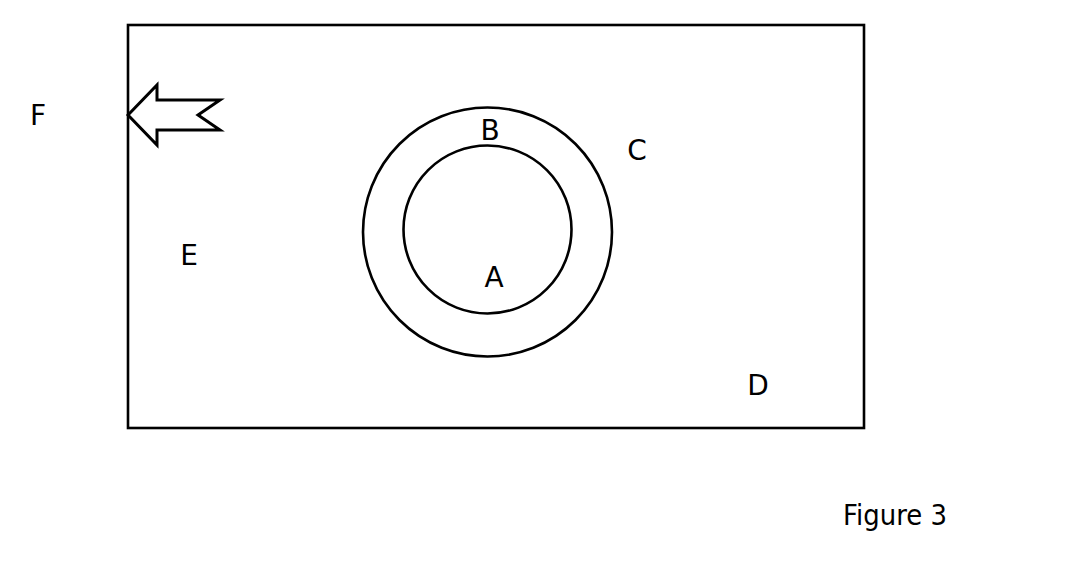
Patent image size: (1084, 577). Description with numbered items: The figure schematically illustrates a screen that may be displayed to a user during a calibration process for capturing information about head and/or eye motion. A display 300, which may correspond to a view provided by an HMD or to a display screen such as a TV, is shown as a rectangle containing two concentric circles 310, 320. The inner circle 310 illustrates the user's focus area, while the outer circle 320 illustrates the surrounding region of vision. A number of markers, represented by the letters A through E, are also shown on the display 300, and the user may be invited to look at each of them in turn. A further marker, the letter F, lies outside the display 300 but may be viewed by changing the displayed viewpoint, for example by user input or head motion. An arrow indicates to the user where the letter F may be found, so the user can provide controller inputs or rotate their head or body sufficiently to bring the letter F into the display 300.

The display 300 is at (463, 266).
The concentric circle (user's focus area) 310 is at (488, 230).
The concentric circle (surrounding region of vision) 320 is at (487, 232).